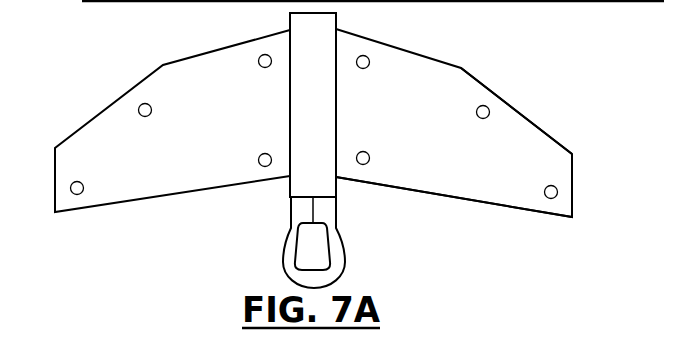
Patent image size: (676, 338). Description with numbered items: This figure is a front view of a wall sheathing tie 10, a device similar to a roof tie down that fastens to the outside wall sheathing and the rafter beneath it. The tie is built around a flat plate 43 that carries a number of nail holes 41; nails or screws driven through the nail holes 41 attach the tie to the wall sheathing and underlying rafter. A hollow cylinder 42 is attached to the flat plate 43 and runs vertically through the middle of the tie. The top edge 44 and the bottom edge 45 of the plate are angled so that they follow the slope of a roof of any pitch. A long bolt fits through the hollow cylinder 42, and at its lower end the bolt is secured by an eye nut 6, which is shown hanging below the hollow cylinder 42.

The wall sheathing tie 10 is at (187, 180).
The nail holes 41 is at (262, 54).
The hollow cylinder 42 is at (330, 30).
The flat plate 43 is at (431, 90).
The top edge 44 is at (518, 112).
The bottom edge 45 is at (446, 198).
The eye nut 6 is at (320, 212).